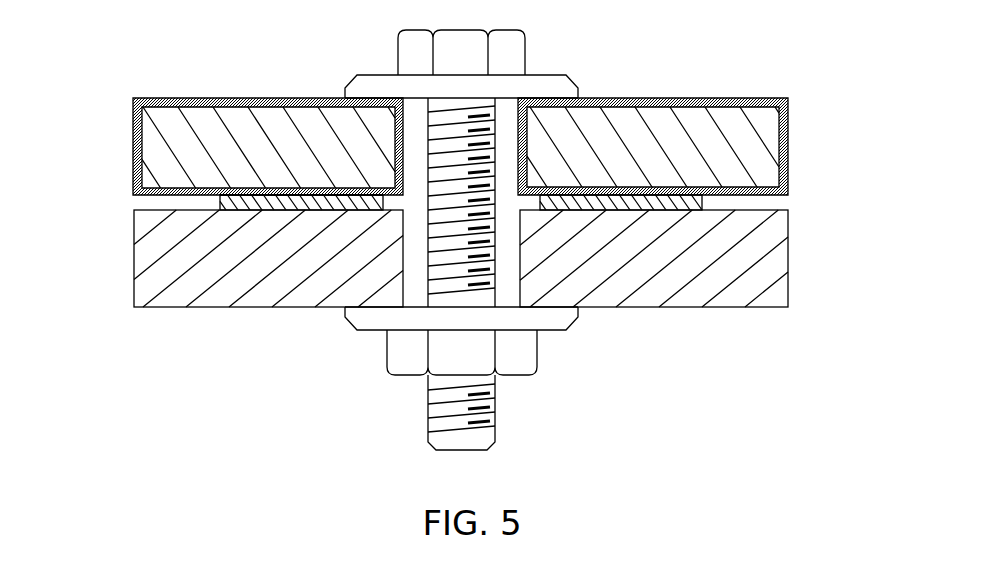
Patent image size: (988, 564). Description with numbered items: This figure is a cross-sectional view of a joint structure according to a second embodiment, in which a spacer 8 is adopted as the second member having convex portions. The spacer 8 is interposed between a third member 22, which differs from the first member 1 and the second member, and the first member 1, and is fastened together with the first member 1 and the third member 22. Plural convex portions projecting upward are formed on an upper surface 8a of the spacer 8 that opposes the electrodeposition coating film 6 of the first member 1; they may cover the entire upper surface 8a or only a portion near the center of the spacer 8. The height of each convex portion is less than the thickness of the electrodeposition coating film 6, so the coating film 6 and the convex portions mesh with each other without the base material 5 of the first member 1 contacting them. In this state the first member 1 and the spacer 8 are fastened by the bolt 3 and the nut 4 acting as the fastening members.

The first member 1 is at (798, 94).
The bolt 3 is at (488, 141).
The nut 4 is at (407, 367).
The base material 5 is at (188, 139).
The electrodeposition coating film 6 is at (133, 170).
The spacer 8 is at (250, 203).
The upper surface 8a is at (257, 200).
The third member 22 is at (743, 265).